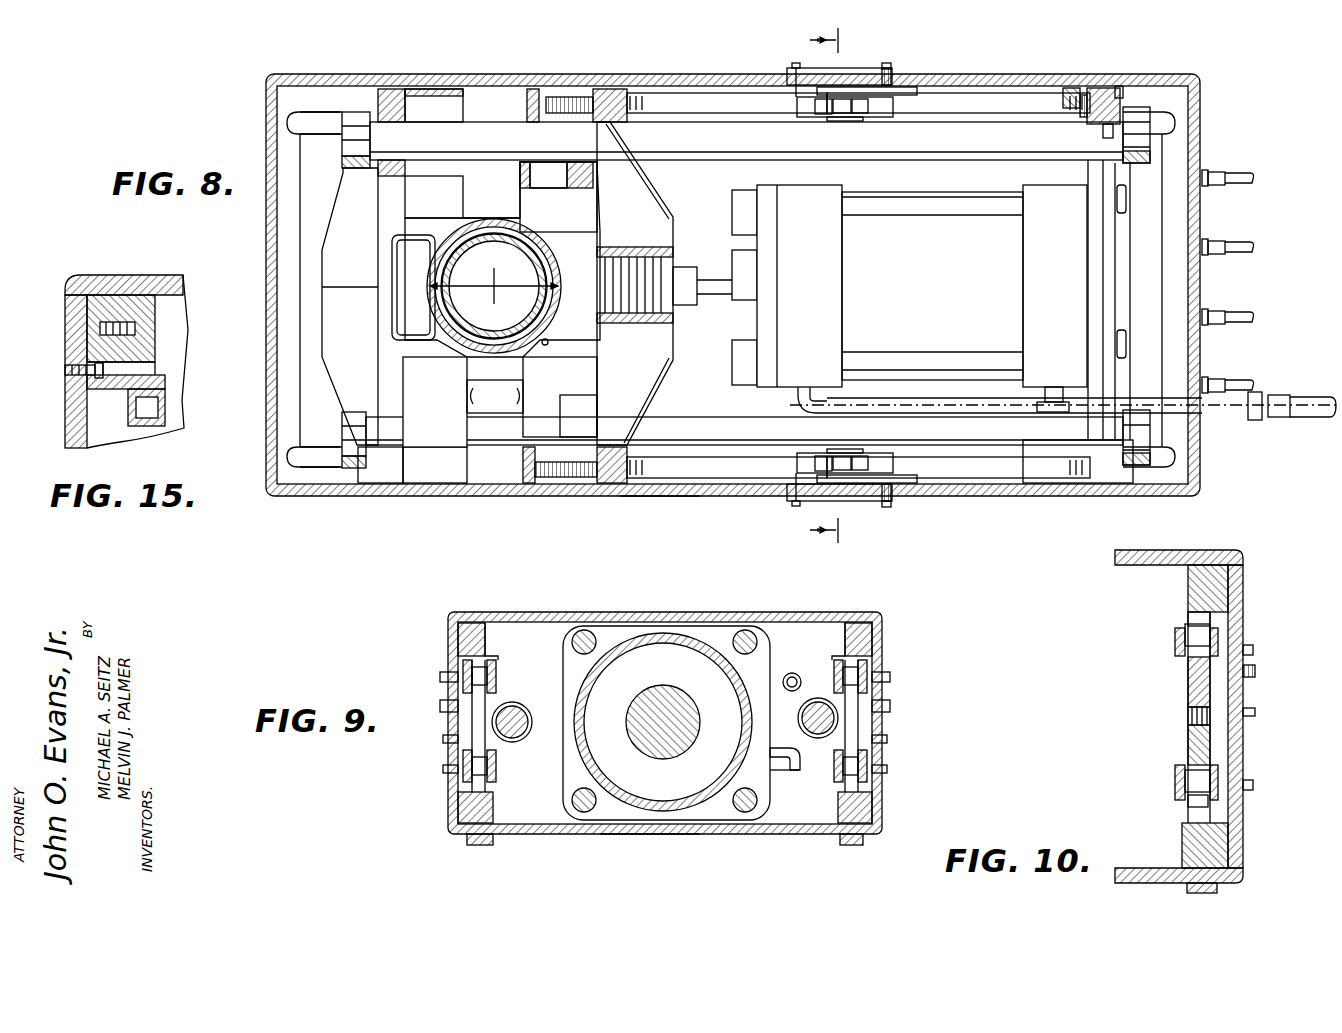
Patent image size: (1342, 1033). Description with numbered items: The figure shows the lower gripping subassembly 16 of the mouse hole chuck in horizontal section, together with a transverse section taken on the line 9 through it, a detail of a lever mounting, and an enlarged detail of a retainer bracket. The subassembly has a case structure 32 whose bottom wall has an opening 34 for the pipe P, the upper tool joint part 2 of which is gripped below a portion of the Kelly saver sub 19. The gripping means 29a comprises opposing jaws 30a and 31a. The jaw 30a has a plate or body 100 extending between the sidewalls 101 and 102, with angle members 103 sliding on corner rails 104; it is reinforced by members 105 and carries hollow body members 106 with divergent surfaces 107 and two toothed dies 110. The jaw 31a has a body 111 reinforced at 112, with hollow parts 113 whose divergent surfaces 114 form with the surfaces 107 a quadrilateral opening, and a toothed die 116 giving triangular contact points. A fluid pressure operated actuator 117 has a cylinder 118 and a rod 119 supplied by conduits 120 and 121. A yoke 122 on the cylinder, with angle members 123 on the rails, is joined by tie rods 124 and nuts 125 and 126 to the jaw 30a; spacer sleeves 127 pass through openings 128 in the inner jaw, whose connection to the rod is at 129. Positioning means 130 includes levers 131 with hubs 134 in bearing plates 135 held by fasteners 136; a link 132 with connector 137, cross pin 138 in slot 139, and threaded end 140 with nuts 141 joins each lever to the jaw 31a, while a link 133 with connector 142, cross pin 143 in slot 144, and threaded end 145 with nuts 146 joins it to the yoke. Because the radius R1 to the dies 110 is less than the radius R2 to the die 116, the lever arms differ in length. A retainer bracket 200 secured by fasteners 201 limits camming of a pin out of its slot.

In FIG. 8, the upper tool joint part 2 is at (470, 243).
In FIG. 8, the section line 9— 9 is at (808, 285).
In FIG. 8, the lower gripping subassembly 16 is at (645, 498).
In FIG. 9, the lower gripping subassembly 16 is at (642, 835).
In FIG. 10, the lower gripping subassembly 16 is at (1244, 558).
In FIG. 8, the Kelly saver sub 19 is at (480, 306).
In FIG. 8, the gripping means 29a is at (300, 396).
In FIG. 8, the jaw 30a is at (478, 404).
In FIG. 8, the jaw 31a is at (520, 400).
In FIG. 8, the case structure 32 is at (1000, 82).
In FIG. 9, the case structure 32 is at (663, 612).
In FIG. 10, the case structure 32 is at (1160, 552).
In FIG. 8, the opening 34 is at (478, 215).
In FIG. 8, the plate or body 100 is at (400, 418).
In FIG. 8, the sidewall 101 is at (440, 88).
In FIG. 9, the sidewall 101 is at (457, 640).
In FIG. 8, the sidewall 102 is at (398, 484).
In FIG. 9, the sidewall 102 is at (880, 652).
In FIG. 10, the sidewall 102 is at (1243, 808).
In FIG. 8, the angle members 103 is at (388, 88).
In FIG. 8, the corner rails 104 is at (322, 108).
In FIG. 9, the corner rails 104 is at (878, 638).
In FIG. 15, the corner rails 104 is at (100, 294).
In FIG. 8, the reinforcing members 105 is at (330, 298).
In FIG. 8, the hollow body members 106 is at (423, 402).
In FIG. 8, the divergent surfaces 107 is at (410, 220).
In FIG. 8, the toothed dies 110 is at (382, 276).
In FIG. 8, the body or plate 111 is at (590, 404).
In FIG. 8, the reinforcement 112 is at (640, 180).
In FIG. 8, the hollow parts 113 is at (555, 206).
In FIG. 8, the divergent surfaces 114 is at (568, 246).
In FIG. 8, the toothed die 116 is at (580, 230).
In FIG. 8, the fluid pressure operated actuator 117 is at (848, 270).
In FIG. 9, the fluid pressure operated actuator 117 is at (671, 721).
In FIG. 8, the actuator cylinder 118 is at (932, 286).
In FIG. 9, the actuator cylinder 118 is at (625, 640).
In FIG. 8, the rod 119 is at (732, 271).
In FIG. 9, the rod 119 is at (668, 750).
In FIG. 8, the conduit 120 is at (1056, 386).
In FIG. 9, the conduit 120 is at (775, 750).
In FIG. 8, the conduit 121 is at (940, 402).
In FIG. 9, the conduit 121 is at (782, 682).
In FIG. 8, the yoke or plate 122 is at (1098, 228).
In FIG. 9, the yoke or plate 122 is at (778, 628).
In FIG. 8, the angle members 123 is at (1092, 88).
In FIG. 9, the angle members 123 is at (500, 628).
In FIG. 8, the tie rods 124 is at (1075, 108).
In FIG. 9, the tie rods 124 is at (515, 705).
In FIG. 8, the nuts 125 is at (1150, 132).
In FIG. 8, the nuts 126 is at (342, 142).
In FIG. 8, the spacer sleeve 127 is at (744, 283).
In FIG. 9, the spacer sleeve 127 is at (798, 770).
In FIG. 8, the openings 128 is at (572, 96).
In FIG. 9, the openings 128 is at (512, 740).
In FIG. 8, the connection 129 is at (652, 254).
In FIG. 8, the positioning means 130 is at (880, 70).
In FIG. 9, the positioning means 130 is at (440, 690).
In FIG. 10, the positioning means 130 is at (1260, 706).
In FIG. 8, the cranks or levers 131 is at (862, 113).
In FIG. 9, the cranks or levers 131 is at (448, 706).
In FIG. 10, the cranks or levers 131 is at (1195, 682).
In FIG. 8, the link 132 is at (720, 90).
In FIG. 15, the link 132 is at (158, 424).
In FIG. 8, the link 133 is at (945, 92).
In FIG. 10, the hub 134 is at (1192, 708).
In FIG. 8, the bearing plate 135 is at (850, 68).
In FIG. 9, the bearing plate 135 is at (446, 738).
In FIG. 10, the bearing plate 135 is at (1256, 668).
In FIG. 8, the fasteners 136 is at (895, 500).
In FIG. 9, the fasteners 136 is at (446, 768).
In FIG. 10, the fasteners 136 is at (1258, 648).
In FIG. 8, the connector 137 is at (790, 90).
In FIG. 9, the connector 137 is at (497, 768).
In FIG. 10, the connector 137 is at (1182, 796).
In FIG. 9, the cross pin 138 is at (885, 768).
In FIG. 10, the cross pin 138 is at (1195, 785).
In FIG. 10, the elongated slot 139 is at (1196, 806).
In FIG. 8, the threaded end 140 is at (612, 88).
In FIG. 8, the nuts 141 is at (533, 88).
In FIG. 8, the connector 142 is at (822, 114).
In FIG. 9, the connector 142 is at (497, 670).
In FIG. 10, the connector 142 is at (1180, 656).
In FIG. 8, the cross pin 143 is at (840, 462).
In FIG. 9, the cross pin 143 is at (465, 668).
In FIG. 10, the cross pin 143 is at (1195, 645).
In FIG. 10, the elongated slot 144 is at (1200, 630).
In FIG. 8, the threaded end 145 is at (1084, 92).
In FIG. 8, the nuts 146 is at (1110, 120).
In FIG. 15, the retainer bracket 200 is at (168, 380).
In FIG. 15, the fasteners 201 is at (66, 374).
In FIG. 8, the pipe P is at (496, 228).
In FIG. 8, the radius R1 is at (462, 279).
In FIG. 8, the radius R2 is at (526, 279).